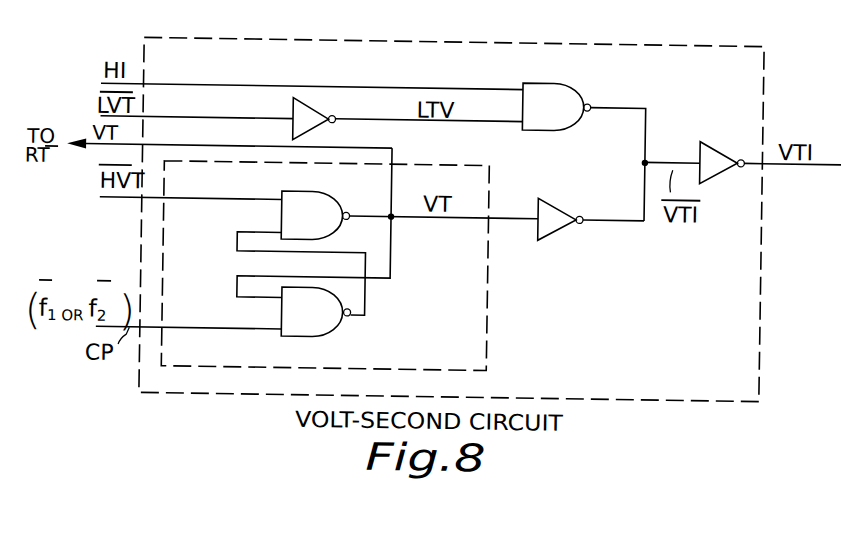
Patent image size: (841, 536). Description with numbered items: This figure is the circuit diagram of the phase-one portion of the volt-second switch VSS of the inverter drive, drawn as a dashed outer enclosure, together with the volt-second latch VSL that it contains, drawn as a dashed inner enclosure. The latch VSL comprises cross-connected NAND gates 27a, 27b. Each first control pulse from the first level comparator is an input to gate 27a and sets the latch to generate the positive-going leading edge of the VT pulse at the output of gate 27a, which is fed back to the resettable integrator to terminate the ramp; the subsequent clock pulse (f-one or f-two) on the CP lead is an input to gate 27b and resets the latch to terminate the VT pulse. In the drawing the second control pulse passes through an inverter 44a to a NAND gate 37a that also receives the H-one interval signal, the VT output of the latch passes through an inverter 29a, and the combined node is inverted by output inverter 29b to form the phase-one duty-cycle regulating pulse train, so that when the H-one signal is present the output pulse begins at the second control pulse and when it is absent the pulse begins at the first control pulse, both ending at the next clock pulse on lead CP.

The inverter 44a is at (316, 112).
The NAND gate 37a is at (549, 86).
The NAND gate 27a is at (333, 205).
The NAND gate 27b is at (315, 340).
The inverter 29a is at (555, 208).
The inverter 29b is at (706, 146).
The volt-second switch VSS is at (601, 398).
The volt-second latch VSL is at (489, 300).